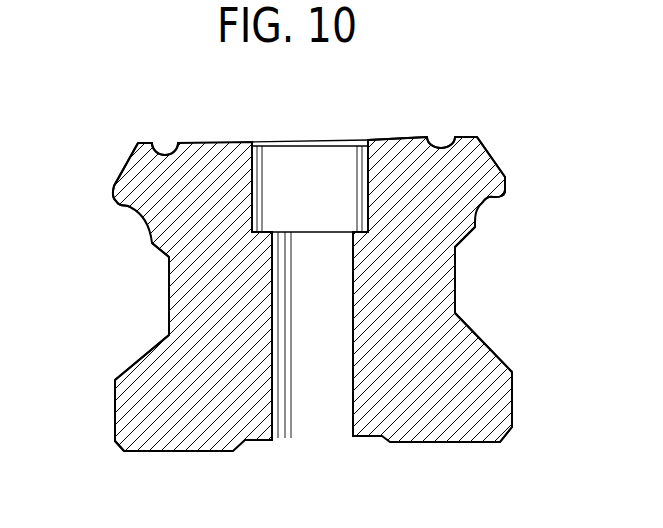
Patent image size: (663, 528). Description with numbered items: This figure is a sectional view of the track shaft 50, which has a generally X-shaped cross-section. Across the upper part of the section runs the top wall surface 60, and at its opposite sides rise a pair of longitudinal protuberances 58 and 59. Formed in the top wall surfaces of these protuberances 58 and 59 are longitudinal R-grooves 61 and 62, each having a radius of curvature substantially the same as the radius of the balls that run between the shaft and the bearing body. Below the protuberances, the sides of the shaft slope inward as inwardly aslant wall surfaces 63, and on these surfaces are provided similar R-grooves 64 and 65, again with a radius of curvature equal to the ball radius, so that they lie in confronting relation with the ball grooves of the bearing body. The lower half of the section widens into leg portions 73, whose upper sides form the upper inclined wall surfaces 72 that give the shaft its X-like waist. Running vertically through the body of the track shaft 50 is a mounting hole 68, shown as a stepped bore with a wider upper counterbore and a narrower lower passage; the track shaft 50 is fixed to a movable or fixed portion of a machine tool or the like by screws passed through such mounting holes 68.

The track shaft 50 is at (197, 441).
The longitudinal protuberance 58 is at (478, 159).
The longitudinal protuberance 59 is at (140, 169).
The top wall surface 60 is at (405, 136).
The R-groove 61 is at (452, 146).
The R-groove 62 is at (175, 151).
The inwardly aslant wall surface 63 is at (154, 246).
The R-groove 64 is at (485, 208).
The R-groove 65 is at (126, 211).
The mounting hole 68 is at (352, 431).
The upper inclined wall surface 72 is at (148, 348).
The leg portion 73 is at (132, 403).